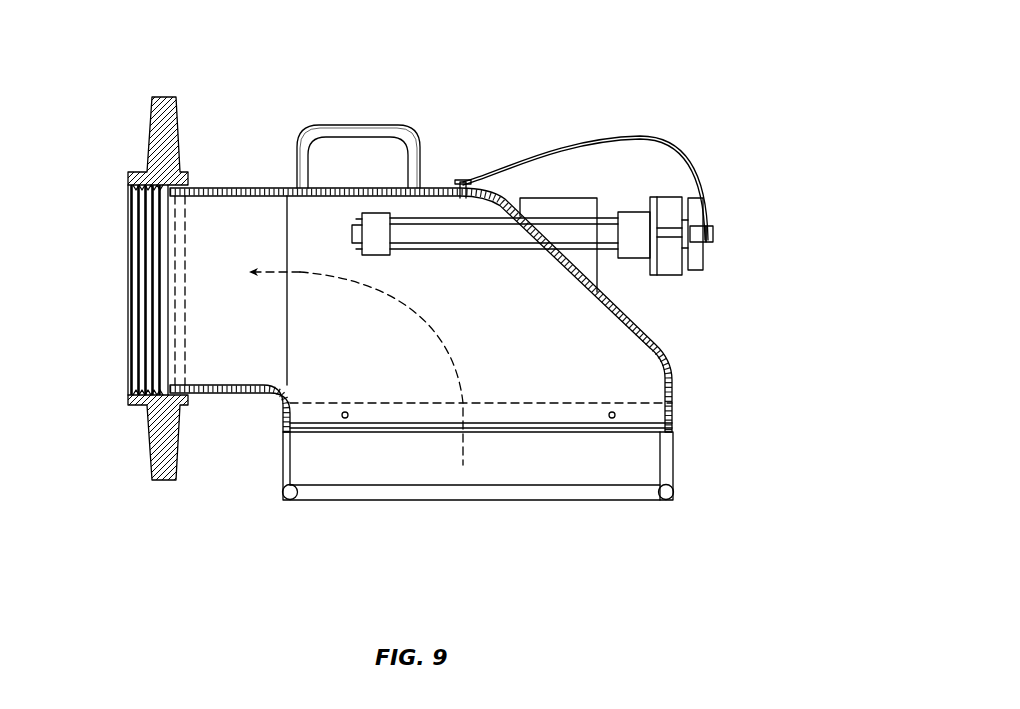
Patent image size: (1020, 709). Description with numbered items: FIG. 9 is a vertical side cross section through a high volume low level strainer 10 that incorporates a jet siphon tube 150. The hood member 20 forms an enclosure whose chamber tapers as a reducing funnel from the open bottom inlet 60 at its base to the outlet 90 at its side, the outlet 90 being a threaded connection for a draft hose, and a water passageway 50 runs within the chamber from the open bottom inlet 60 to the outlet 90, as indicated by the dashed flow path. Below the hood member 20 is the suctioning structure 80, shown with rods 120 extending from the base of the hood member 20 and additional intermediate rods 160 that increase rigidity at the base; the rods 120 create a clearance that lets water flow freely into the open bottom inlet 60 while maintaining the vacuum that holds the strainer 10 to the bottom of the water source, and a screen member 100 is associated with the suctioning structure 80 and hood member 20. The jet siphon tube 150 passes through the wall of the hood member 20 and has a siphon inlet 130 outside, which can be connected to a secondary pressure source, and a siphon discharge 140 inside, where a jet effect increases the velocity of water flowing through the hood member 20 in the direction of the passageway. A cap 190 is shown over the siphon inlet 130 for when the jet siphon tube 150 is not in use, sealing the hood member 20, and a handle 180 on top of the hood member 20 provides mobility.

The strainer 10 is at (730, 82).
The hood member 20 is at (643, 314).
The water passageway 50 is at (410, 305).
The open bottom inlet 60 is at (430, 442).
The suctioning structure 80 is at (685, 455).
The outlet 90 is at (118, 290).
The screen member 100 is at (635, 425).
The rods 120 is at (677, 468).
The siphon inlet 130 is at (683, 248).
The siphon discharge 140 is at (352, 236).
The jet siphon tube 150 is at (420, 195).
The intermediate rods 160 is at (532, 467).
The handle 180 is at (375, 125).
The cap 190 is at (698, 212).